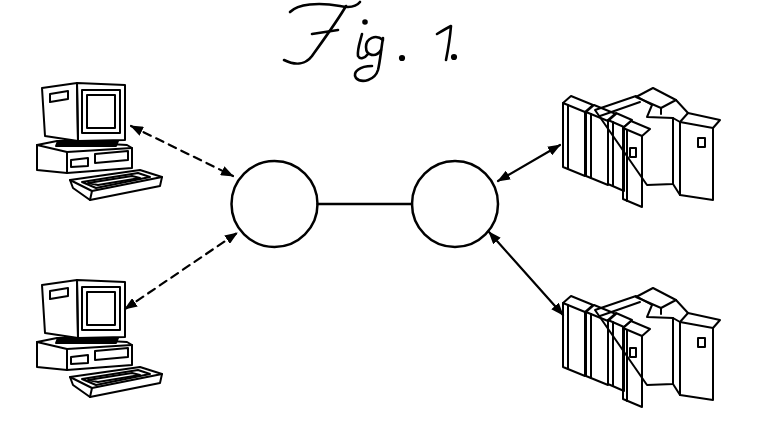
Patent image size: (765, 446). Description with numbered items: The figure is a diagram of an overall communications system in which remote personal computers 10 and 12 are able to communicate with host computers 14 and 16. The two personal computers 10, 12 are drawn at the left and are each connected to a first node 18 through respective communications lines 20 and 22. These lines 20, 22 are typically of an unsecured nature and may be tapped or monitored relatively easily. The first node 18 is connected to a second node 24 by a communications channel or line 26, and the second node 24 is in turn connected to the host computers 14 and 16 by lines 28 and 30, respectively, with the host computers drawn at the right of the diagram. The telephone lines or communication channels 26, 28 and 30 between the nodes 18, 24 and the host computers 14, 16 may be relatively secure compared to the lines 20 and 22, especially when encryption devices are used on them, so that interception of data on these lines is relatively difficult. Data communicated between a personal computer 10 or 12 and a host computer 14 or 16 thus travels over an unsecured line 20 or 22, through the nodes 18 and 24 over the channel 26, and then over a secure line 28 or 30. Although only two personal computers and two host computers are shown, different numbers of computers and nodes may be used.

The remote personal computer 10 is at (123, 97).
The remote personal computer 12 is at (107, 280).
The host computer 14 is at (561, 109).
The host computer 16 is at (561, 349).
The node 18 is at (313, 183).
The communications line 20 is at (188, 155).
The communications line 22 is at (198, 262).
The node 24 is at (456, 247).
The communications channel or line 26 is at (382, 207).
The line 28 is at (513, 174).
The line 30 is at (527, 274).